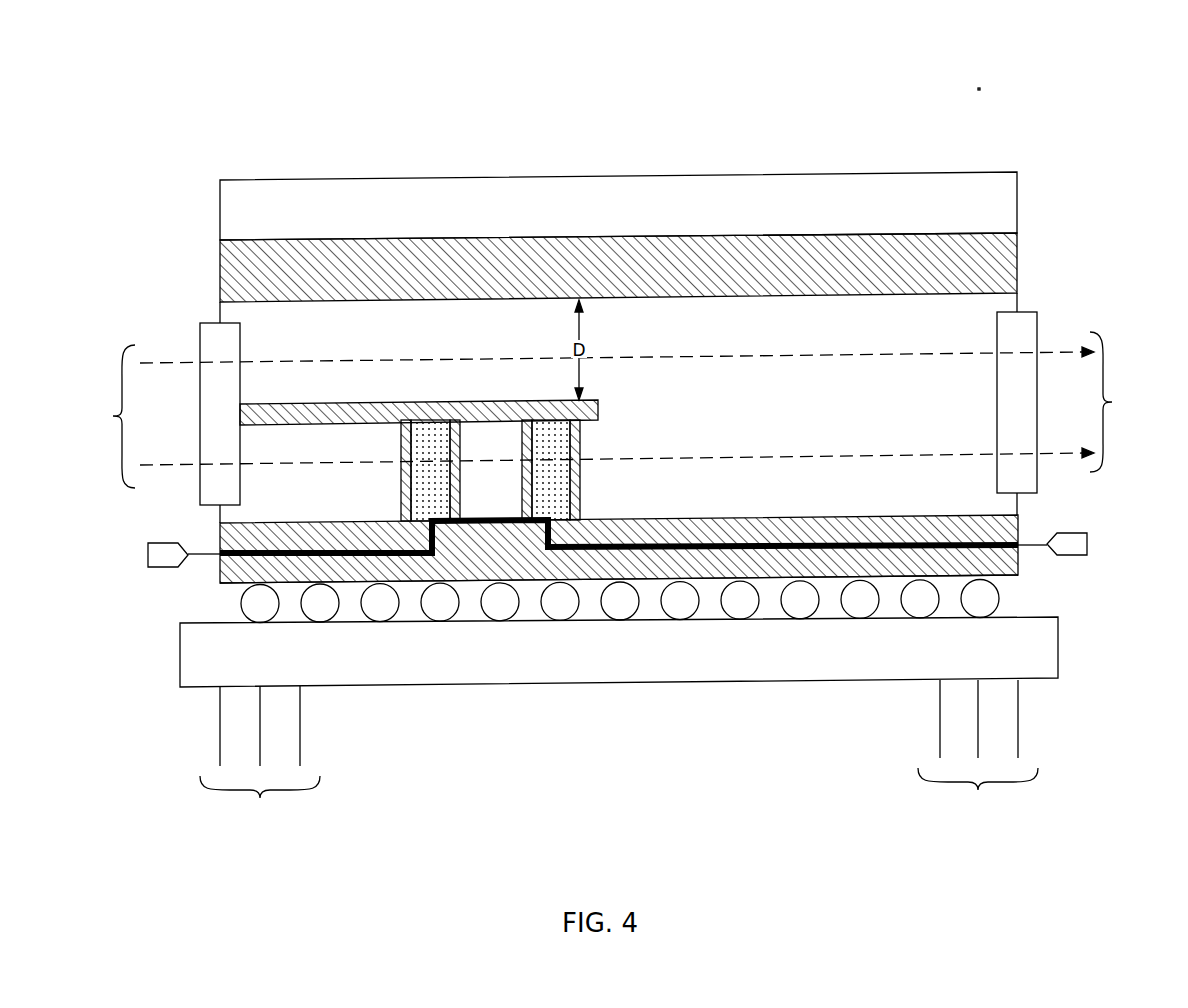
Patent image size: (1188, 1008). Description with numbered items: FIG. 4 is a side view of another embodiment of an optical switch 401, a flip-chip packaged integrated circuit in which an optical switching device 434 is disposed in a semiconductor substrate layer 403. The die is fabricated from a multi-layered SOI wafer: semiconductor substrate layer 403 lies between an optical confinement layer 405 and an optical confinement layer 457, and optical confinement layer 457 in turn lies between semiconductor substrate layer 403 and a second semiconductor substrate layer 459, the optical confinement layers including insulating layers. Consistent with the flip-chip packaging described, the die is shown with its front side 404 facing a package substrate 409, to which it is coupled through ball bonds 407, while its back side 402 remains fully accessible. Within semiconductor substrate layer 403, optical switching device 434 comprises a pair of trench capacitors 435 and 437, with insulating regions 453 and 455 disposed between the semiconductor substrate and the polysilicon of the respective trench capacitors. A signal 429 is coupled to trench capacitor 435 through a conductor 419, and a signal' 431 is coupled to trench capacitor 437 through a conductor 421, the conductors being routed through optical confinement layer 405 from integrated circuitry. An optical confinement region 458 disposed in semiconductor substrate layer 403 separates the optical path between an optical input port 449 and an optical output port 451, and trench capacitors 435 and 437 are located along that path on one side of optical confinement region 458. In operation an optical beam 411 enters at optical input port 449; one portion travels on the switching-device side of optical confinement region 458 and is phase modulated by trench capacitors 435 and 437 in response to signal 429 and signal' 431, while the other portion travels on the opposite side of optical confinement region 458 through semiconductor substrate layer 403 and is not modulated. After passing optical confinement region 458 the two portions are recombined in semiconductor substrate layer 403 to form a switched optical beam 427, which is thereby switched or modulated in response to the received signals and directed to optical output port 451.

The optical switch 401 is at (972, 88).
The optical element / cover 402 is at (858, 178).
The semiconductor substrate layer 459 is at (1018, 184).
The optical confinement layer 457 is at (1018, 246).
The optical input port 449 is at (215, 323).
The optical output port 451 is at (1025, 312).
The optical beam 411 is at (94, 416).
The switched optical beam 427 is at (1131, 402).
The optical switching device 434 is at (662, 450).
The optical confinement region 458 is at (604, 412).
The insulating region 453 is at (460, 452).
The trench capacitor 435 is at (452, 492).
The insulating region 455 is at (580, 452).
The trench capacitor 437 is at (560, 496).
The semiconductor substrate layer 403 is at (1028, 514).
The optical confinement layer 405 is at (1028, 530).
The conductor 419 is at (382, 551).
The conductor 421 is at (619, 691).
The signal 429 is at (110, 540).
The signal' 431 is at (1120, 528).
The substrate bottom surface 404 is at (1012, 578).
The solder balls 407 is at (680, 608).
The circuit board 409 is at (1058, 652).